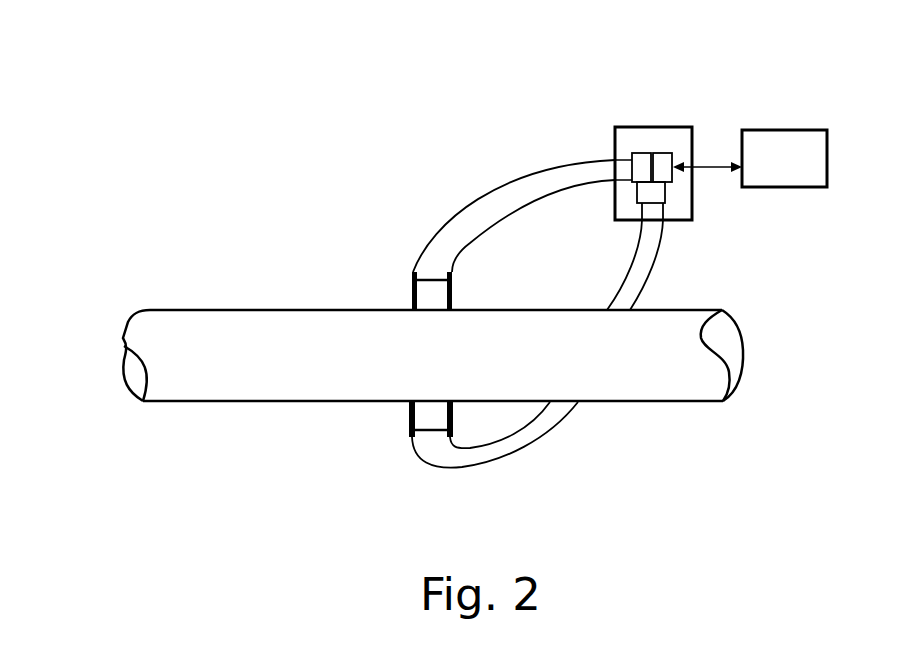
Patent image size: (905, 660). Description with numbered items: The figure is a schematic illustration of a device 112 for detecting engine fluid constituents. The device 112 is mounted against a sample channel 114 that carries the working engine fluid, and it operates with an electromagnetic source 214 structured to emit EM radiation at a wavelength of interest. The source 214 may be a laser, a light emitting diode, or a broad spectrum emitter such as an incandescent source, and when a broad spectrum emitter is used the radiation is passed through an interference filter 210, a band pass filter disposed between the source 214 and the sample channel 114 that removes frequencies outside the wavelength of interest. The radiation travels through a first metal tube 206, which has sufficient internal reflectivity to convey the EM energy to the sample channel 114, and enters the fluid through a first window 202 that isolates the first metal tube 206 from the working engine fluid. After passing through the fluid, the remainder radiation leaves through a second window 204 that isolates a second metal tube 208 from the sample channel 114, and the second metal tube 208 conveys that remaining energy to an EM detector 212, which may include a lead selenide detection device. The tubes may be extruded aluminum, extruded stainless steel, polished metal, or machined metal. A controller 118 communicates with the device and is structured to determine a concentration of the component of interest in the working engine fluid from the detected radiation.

The device for detecting engine fluid constituents 112 is at (90, 99).
The sample channel 114 is at (257, 310).
The controller 118 is at (750, 158).
The first window 202 is at (430, 278).
The second window 204 is at (408, 425).
The first metal tube 206 is at (522, 178).
The second metal tube 208 is at (543, 438).
The interference filter 210 is at (641, 153).
The EM detector 212 is at (665, 197).
The EM source 214 is at (668, 153).